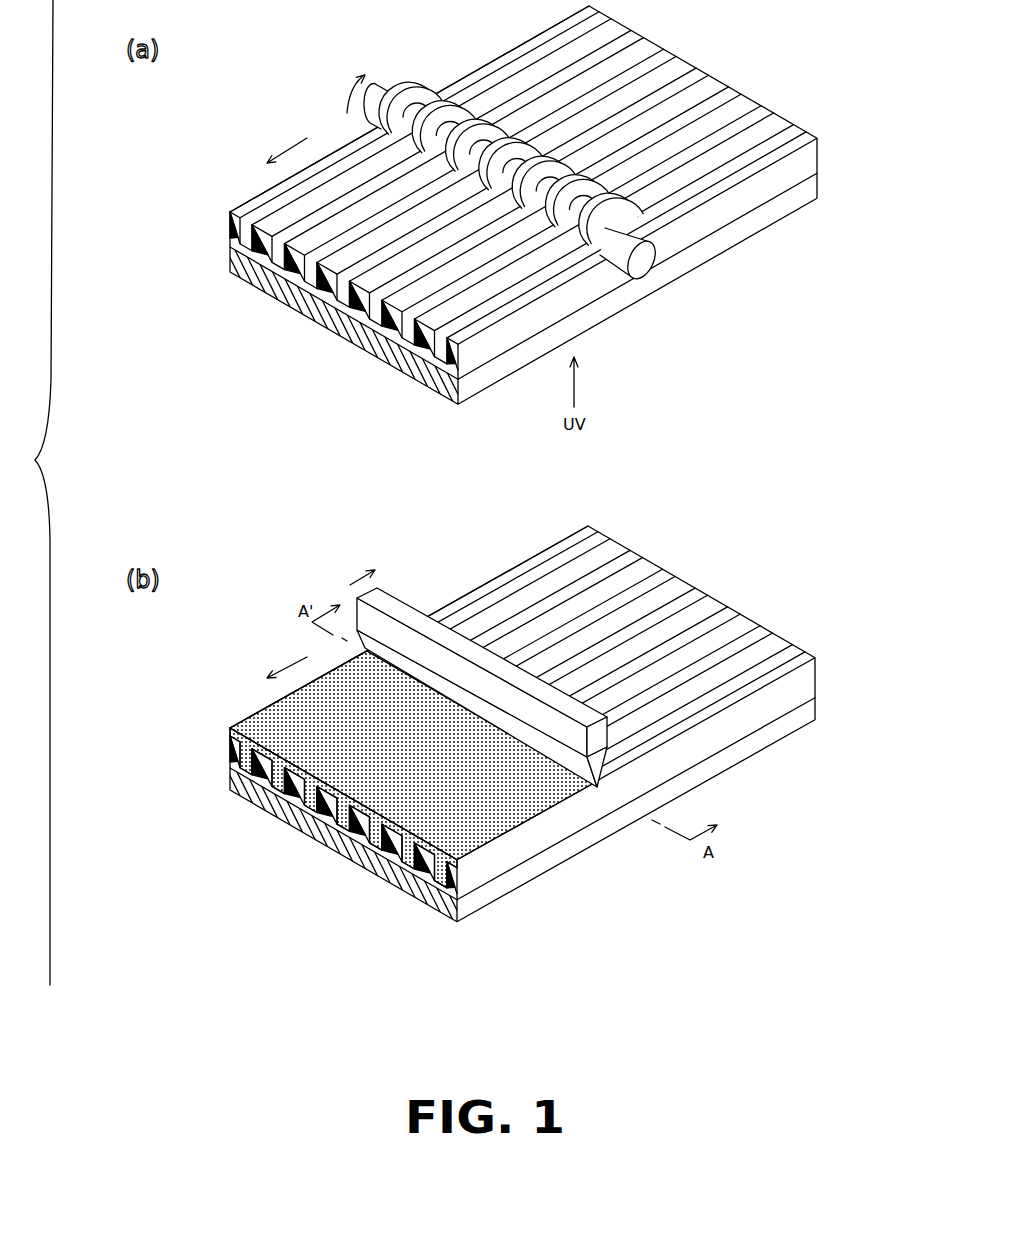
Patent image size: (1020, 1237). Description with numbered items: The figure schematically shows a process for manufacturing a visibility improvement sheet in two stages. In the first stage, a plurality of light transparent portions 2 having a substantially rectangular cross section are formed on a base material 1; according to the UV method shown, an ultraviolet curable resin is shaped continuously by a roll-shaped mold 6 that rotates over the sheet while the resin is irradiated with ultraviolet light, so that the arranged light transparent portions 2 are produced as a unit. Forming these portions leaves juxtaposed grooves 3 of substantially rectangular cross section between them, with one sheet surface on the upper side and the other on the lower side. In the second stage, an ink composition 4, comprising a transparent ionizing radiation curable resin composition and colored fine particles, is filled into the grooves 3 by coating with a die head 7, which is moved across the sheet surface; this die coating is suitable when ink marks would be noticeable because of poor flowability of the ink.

The base material 1 is at (232, 257).
The light transparent portion 2 is at (232, 230).
The groove 3 is at (279, 246).
The colored ink composition 4 is at (262, 720).
The mold 6 is at (416, 92).
The coater (die coater) 7 is at (390, 606).